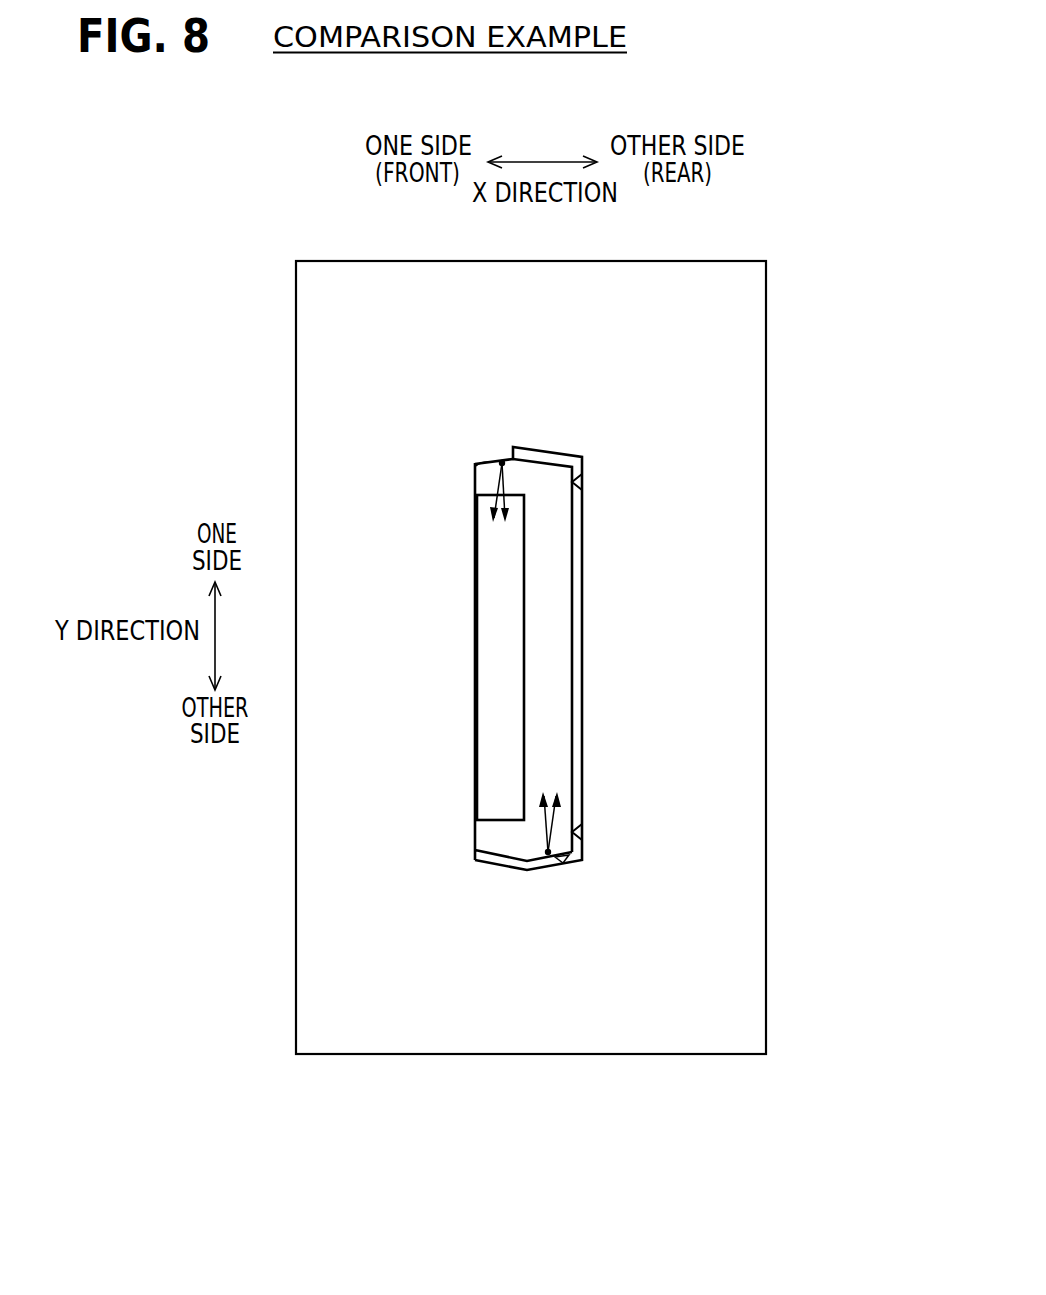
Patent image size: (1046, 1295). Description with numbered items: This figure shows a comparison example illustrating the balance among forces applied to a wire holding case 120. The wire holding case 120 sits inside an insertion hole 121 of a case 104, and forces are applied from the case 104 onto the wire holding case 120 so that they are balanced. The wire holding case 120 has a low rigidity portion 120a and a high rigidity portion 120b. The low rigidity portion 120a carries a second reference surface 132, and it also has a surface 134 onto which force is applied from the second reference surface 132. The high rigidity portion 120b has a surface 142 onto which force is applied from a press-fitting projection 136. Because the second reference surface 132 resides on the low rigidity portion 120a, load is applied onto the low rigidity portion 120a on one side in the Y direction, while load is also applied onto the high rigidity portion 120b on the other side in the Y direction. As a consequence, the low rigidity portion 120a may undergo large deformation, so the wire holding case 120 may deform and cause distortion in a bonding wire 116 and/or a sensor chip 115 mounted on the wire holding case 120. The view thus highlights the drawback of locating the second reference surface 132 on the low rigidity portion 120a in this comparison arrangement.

The case 104 is at (757, 583).
The wire holding case 120 is at (516, 768).
The low rigidity portion 120a is at (500, 837).
The high rigidity portion 120b is at (570, 833).
The insertion hole 121 is at (578, 603).
The sensor chip 115 is at (351, 672).
The bonding wire 116 is at (494, 708).
The second reference surface 132 is at (502, 463).
The surface 134 is at (478, 466).
The press-fitting projection 136 is at (561, 864).
The surface 142 is at (548, 855).